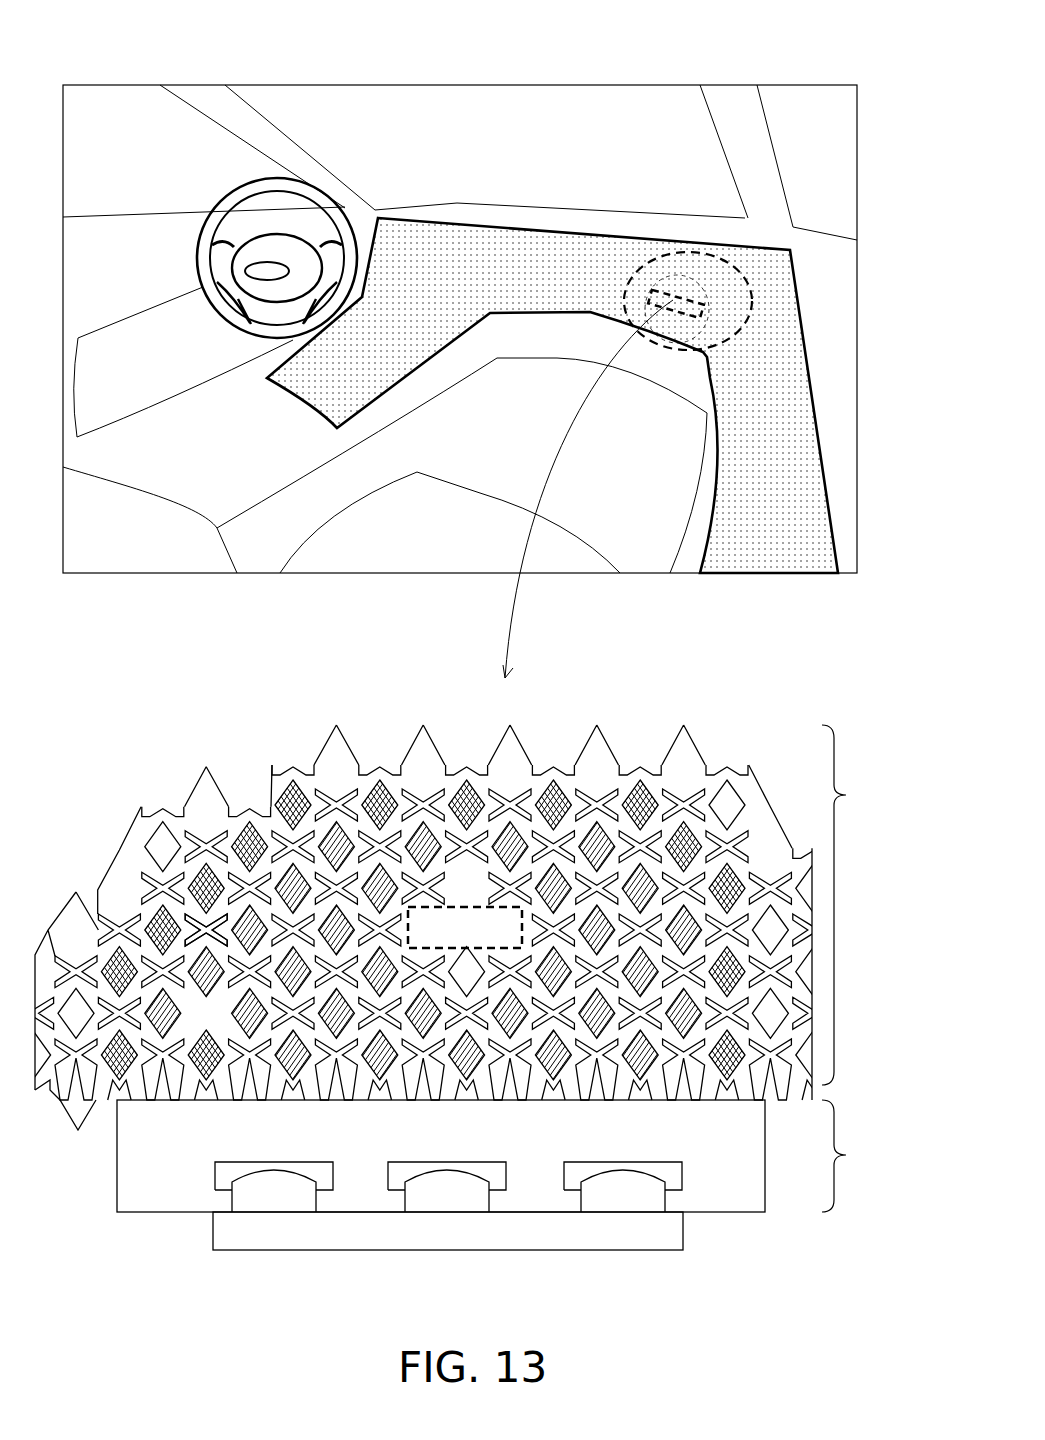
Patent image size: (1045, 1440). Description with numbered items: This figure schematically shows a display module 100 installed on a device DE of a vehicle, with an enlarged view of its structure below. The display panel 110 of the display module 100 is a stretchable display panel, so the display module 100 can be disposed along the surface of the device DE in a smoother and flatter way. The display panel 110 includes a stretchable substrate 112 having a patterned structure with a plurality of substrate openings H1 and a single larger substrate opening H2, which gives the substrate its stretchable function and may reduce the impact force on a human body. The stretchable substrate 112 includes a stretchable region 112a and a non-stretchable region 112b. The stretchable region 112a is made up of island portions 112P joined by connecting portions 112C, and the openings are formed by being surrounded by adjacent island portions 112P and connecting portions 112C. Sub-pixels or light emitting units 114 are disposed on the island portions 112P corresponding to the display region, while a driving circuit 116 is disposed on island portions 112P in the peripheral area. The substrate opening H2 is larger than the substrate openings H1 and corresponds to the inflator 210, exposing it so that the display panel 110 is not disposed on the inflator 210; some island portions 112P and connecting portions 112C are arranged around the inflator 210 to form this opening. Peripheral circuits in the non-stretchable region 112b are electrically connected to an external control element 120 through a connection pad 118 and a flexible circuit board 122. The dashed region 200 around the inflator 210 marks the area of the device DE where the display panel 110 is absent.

The device of the vehicle DE is at (552, 291).
The display module 100 is at (460, 291).
The display panel 110 is at (540, 338).
The sensing region 200 is at (765, 255).
The inflator 210 is at (673, 300).
The stretchable substrate 112 is at (468, 983).
The stretchable region 112a is at (467, 893).
The non-stretchable region 112b is at (520, 1205).
The island portion 112P is at (207, 930).
The connecting portion 112C is at (205, 928).
The sub-pixel 114 is at (600, 847).
The driving circuit 116 is at (700, 835).
The substrate opening H1 is at (597, 805).
The substrate opening H2 is at (472, 880).
The connection pad 118 is at (333, 1182).
The external control element 120 is at (668, 1238).
The flexible circuit board 122 is at (275, 1196).